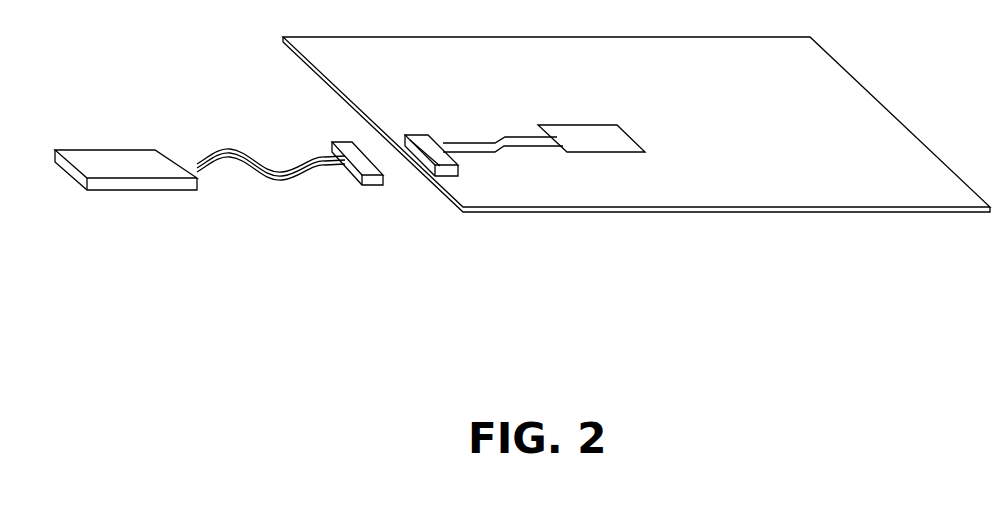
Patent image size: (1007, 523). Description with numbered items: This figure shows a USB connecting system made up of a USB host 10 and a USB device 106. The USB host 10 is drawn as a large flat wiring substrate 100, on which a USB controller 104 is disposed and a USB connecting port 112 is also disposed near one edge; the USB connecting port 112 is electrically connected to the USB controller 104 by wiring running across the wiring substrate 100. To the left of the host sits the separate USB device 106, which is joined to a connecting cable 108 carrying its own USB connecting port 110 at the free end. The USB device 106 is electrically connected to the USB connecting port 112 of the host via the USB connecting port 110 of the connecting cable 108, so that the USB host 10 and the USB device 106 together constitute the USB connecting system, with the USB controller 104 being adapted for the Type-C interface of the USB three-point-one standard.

The USB host 10 is at (735, 280).
The wiring substrate 100 is at (710, 173).
The USB controller 104 is at (598, 142).
The USB device 106 is at (125, 163).
The connecting cable 108 is at (273, 173).
The USB connecting port 110 is at (360, 163).
The USB connecting port 112 is at (445, 157).